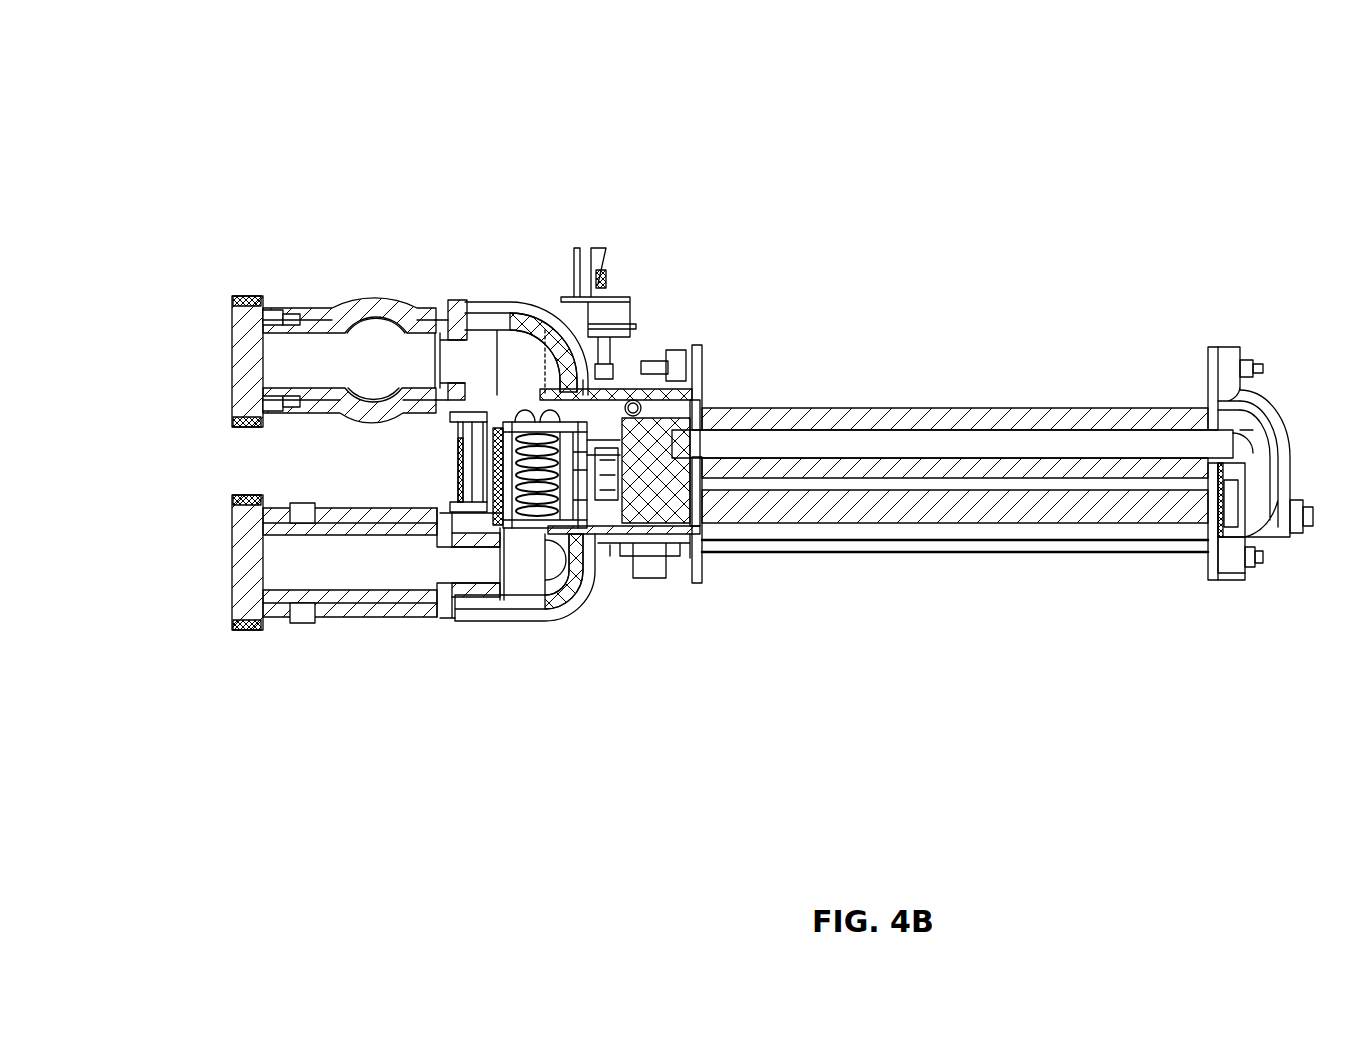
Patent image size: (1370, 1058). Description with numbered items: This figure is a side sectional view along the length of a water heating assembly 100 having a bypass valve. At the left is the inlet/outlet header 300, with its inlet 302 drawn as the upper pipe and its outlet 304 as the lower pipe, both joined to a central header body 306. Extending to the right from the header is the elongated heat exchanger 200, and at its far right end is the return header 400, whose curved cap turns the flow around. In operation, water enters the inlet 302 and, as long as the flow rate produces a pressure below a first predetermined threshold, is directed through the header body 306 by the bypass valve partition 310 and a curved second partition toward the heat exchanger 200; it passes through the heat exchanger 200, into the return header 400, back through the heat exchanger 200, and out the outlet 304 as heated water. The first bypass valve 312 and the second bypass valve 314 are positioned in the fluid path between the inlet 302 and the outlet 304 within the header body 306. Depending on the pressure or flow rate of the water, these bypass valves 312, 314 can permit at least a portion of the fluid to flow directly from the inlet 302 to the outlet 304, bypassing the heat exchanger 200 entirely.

The water heating assembly 100 is at (753, 362).
The heat exchanger 200 is at (942, 365).
The inlet/outlet header 300 is at (439, 427).
The inlet 302 is at (262, 368).
The outlet 304 is at (258, 566).
The header body 306 is at (509, 303).
The bypass valve partition 310 is at (591, 513).
The first bypass valve 312 is at (550, 403).
The second bypass valve 314 is at (513, 397).
The return header 400 is at (1318, 385).